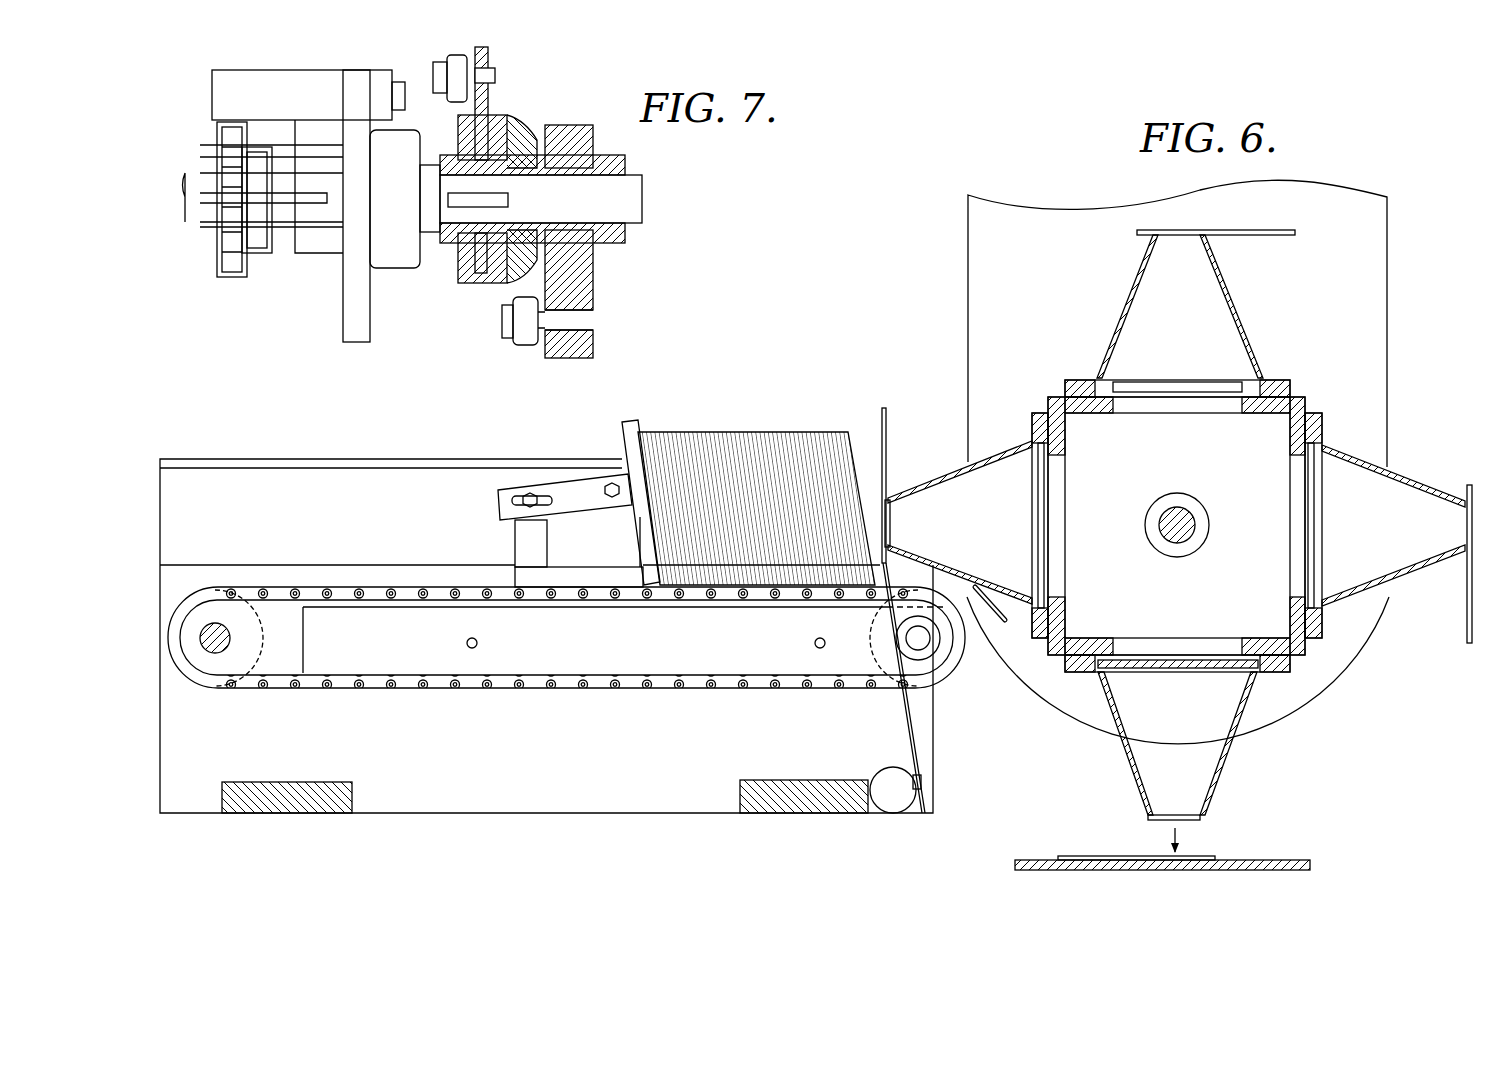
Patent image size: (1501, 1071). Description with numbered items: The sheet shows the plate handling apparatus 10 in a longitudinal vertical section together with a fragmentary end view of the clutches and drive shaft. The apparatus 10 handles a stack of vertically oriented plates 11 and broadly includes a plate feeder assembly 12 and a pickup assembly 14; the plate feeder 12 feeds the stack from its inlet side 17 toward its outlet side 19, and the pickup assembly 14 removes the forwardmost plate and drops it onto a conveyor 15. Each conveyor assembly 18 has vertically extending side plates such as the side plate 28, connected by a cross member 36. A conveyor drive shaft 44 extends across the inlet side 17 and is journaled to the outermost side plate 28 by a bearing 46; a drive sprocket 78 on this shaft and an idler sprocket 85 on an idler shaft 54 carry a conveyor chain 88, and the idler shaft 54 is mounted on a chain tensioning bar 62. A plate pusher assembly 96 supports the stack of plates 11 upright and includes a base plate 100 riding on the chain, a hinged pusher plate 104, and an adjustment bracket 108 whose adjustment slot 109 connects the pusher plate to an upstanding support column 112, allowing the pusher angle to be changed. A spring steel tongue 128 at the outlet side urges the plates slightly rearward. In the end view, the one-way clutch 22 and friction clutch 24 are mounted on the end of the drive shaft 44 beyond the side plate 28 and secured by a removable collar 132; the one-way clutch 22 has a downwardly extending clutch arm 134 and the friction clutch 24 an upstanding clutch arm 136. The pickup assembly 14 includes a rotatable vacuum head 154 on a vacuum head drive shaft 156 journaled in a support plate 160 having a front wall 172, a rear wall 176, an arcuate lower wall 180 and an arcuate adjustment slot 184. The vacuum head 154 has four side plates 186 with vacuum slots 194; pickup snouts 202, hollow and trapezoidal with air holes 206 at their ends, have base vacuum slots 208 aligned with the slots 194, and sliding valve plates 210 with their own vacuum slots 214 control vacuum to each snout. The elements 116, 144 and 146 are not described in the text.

In FIG. 6, the plate handling apparatus 10 is at (855, 300).
In FIG. 7, the plates 11 is at (728, 430).
In FIG. 6, the plates 11 is at (1210, 232).
In FIG. 7, the plate feeder assembly 12 is at (428, 440).
In FIG. 6, the pickup assembly 14 is at (1403, 412).
In FIG. 6, the conveyor 15 is at (1270, 860).
In FIG. 7, the inlet side 17 is at (178, 832).
In FIG. 7, the conveyor assembly 18 is at (516, 832).
In FIG. 6, the outlet side 19 is at (922, 445).
In FIG. 7, the one-way clutch 22 is at (565, 148).
In FIG. 7, the friction clutch 24 is at (462, 272).
In FIG. 7, the side plate 28 is at (345, 325).
In FIG. 7, the cross member 36 is at (322, 780).
In FIG. 7, the conveyor drive shaft 44 is at (623, 203).
In FIG. 7, the bearing 46 is at (390, 250).
In FIG. 7, the idler shaft 54 is at (920, 645).
In FIG. 7, the chain tensioning bar 62 is at (622, 660).
In FIG. 7, the drive sprocket 78 is at (250, 222).
In FIG. 7, the idler sprocket 85 is at (873, 650).
In FIG. 7, the conveyor chain 88 is at (218, 248).
In FIG. 7, the plate pusher assembly 96 is at (578, 468).
In FIG. 7, the base plate 100 is at (520, 570).
In FIG. 7, the pusher plate 104 is at (630, 428).
In FIG. 7, the adjustment bracket 108 is at (570, 502).
In FIG. 7, the adjustment slot 109 is at (515, 503).
In FIG. 7, the support column 112 is at (520, 530).
In FIG. 7, the conveyor frame 116 is at (290, 458).
In FIG. 7, the spring steel tongue 128 is at (880, 735).
In FIG. 7, the removable collar 132 is at (618, 238).
In FIG. 7, the clutch arm 134 is at (580, 303).
In FIG. 7, the clutch arm 136 is at (493, 58).
In FIG. 7, the bolt 144 is at (522, 328).
In FIG. 7, the bolt 146 is at (455, 62).
In FIG. 6, the vacuum head 154 is at (1295, 400).
In FIG. 6, the vacuum head drive shaft 156 is at (1165, 540).
In FIG. 6, the support plate 160 is at (1028, 203).
In FIG. 6, the front wall 172 is at (968, 250).
In FIG. 6, the rear wall 176 is at (1392, 310).
In FIG. 6, the arcuate lower wall 180 is at (1335, 675).
In FIG. 6, the adjustment slot 184 is at (1005, 590).
In FIG. 6, the side plate 186 is at (1085, 420).
In FIG. 6, the vacuum slot 194 is at (1285, 475).
In FIG. 6, the pickup snout 202 is at (1202, 283).
In FIG. 6, the air holes 206 is at (893, 522).
In FIG. 6, the vacuum slot 208 is at (1225, 395).
In FIG. 6, the valve plate 210 is at (1140, 410).
In FIG. 6, the vacuum slot 214 is at (1195, 395).